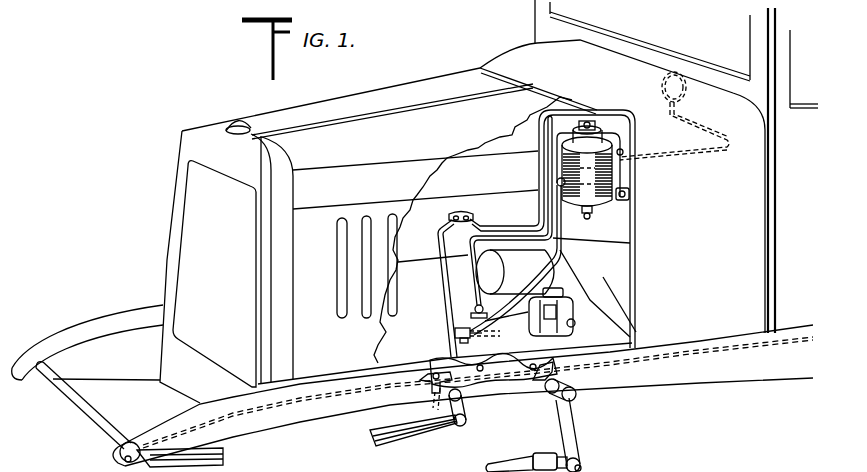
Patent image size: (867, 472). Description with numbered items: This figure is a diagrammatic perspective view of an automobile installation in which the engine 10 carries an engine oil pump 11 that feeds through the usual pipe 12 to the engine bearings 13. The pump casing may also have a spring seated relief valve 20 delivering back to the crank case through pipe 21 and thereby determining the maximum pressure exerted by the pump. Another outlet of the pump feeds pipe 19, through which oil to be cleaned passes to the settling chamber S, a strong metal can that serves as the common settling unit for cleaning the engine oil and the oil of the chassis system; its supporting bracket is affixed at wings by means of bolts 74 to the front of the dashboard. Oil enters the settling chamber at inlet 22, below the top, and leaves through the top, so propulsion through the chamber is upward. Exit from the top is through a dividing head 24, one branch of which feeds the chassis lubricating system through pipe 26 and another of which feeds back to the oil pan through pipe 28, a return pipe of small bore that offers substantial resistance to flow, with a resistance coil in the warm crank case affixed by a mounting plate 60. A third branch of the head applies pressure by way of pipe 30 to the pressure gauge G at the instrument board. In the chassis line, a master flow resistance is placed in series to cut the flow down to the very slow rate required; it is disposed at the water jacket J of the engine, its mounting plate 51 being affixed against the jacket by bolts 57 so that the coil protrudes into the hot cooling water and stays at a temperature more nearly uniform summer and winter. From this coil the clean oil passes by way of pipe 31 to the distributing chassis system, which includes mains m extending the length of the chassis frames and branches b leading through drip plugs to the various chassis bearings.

The engine 10 is at (497, 170).
The engine oil pump 11 is at (455, 333).
The pipe 12 is at (573, 326).
The engine bearings 13 is at (575, 313).
The pipe 19 is at (562, 241).
The relief valve 20 is at (199, 460).
The pipe 21 is at (377, 443).
The inlet 22 is at (557, 174).
The dividing head 24 is at (590, 121).
The pipe 26 is at (522, 227).
The pipe 28 is at (517, 241).
The pipe 30 is at (688, 152).
The pipe 31 is at (442, 305).
The mounting plate 51 is at (465, 211).
The bolts 57 is at (441, 224).
The mounting plate 60 is at (476, 305).
The bolts 74 is at (630, 199).
The pressure gauge G is at (663, 90).
The water jacket J is at (418, 201).
The settling chamber S is at (617, 180).
The branches b is at (430, 387).
The mains m is at (513, 372).